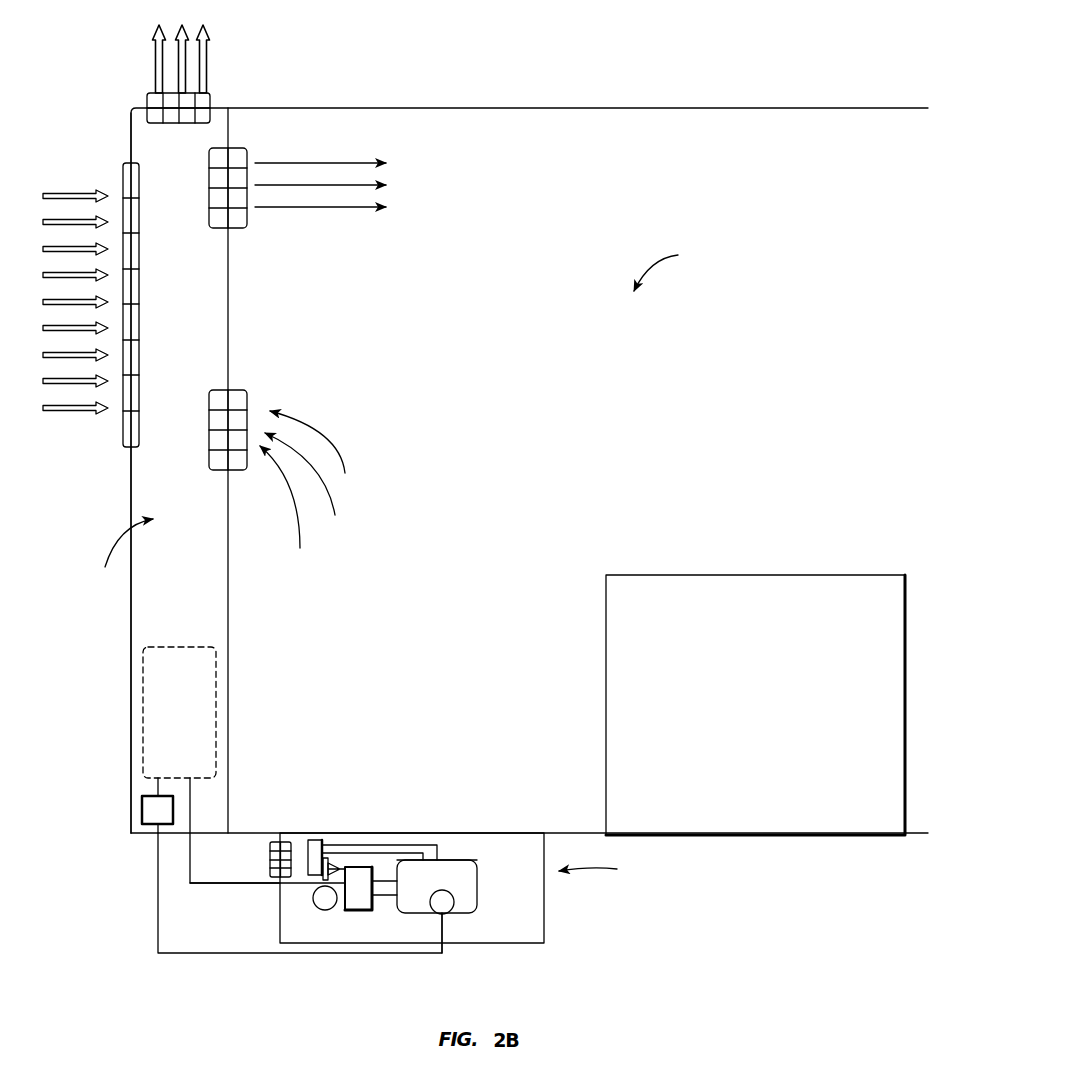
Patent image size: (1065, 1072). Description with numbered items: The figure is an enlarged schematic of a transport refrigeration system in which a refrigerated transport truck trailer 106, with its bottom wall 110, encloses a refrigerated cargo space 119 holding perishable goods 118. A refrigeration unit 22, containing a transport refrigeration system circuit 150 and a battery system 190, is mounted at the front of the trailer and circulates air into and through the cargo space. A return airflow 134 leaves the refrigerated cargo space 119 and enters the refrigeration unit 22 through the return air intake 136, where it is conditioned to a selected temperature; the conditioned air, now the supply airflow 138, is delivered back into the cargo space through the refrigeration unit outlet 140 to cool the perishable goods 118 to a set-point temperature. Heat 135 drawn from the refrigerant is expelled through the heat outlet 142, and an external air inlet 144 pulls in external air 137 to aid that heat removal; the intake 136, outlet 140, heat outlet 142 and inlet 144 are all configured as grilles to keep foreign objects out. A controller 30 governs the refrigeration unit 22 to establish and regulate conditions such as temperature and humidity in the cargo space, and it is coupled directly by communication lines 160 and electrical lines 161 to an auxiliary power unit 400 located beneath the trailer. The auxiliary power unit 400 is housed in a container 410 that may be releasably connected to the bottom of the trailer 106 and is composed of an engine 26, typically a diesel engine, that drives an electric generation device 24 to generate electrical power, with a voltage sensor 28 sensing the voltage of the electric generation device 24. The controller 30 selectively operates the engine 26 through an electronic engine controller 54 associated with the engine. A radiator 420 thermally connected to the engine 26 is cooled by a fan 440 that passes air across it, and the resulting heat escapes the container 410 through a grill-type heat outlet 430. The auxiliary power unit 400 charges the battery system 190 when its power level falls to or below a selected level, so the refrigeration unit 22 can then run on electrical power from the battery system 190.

The refrigeration unit 22 is at (130, 112).
The electric generation device 24 is at (362, 910).
The engine 26 is at (457, 858).
The voltage sensor 28 is at (323, 909).
The controller 30 is at (152, 810).
The electronic engine controller 54 is at (452, 890).
The refrigerated transport truck trailer 106 is at (743, 107).
The bottom wall 110 is at (510, 833).
The perishable goods 118 is at (603, 625).
The refrigerated cargo space 119 is at (673, 266).
The return airflow 134 is at (335, 495).
The heat 135 is at (155, 67).
The return air intake 136 is at (236, 390).
The external air 137 is at (55, 270).
The supply airflow 138 is at (382, 160).
The refrigeration unit outlet 140 is at (240, 148).
The heat outlet 142 is at (205, 103).
The external air inlet 144 is at (128, 428).
The transport refrigeration system circuit 150 is at (156, 470).
The communication lines 160 is at (158, 908).
The electrical lines 161 is at (223, 885).
The battery system 190 is at (244, 765).
The auxiliary power unit 400 is at (607, 875).
The container 410 is at (544, 922).
The radiator 420 is at (313, 840).
The heat outlet 430 is at (268, 849).
The fan 440 is at (320, 877).